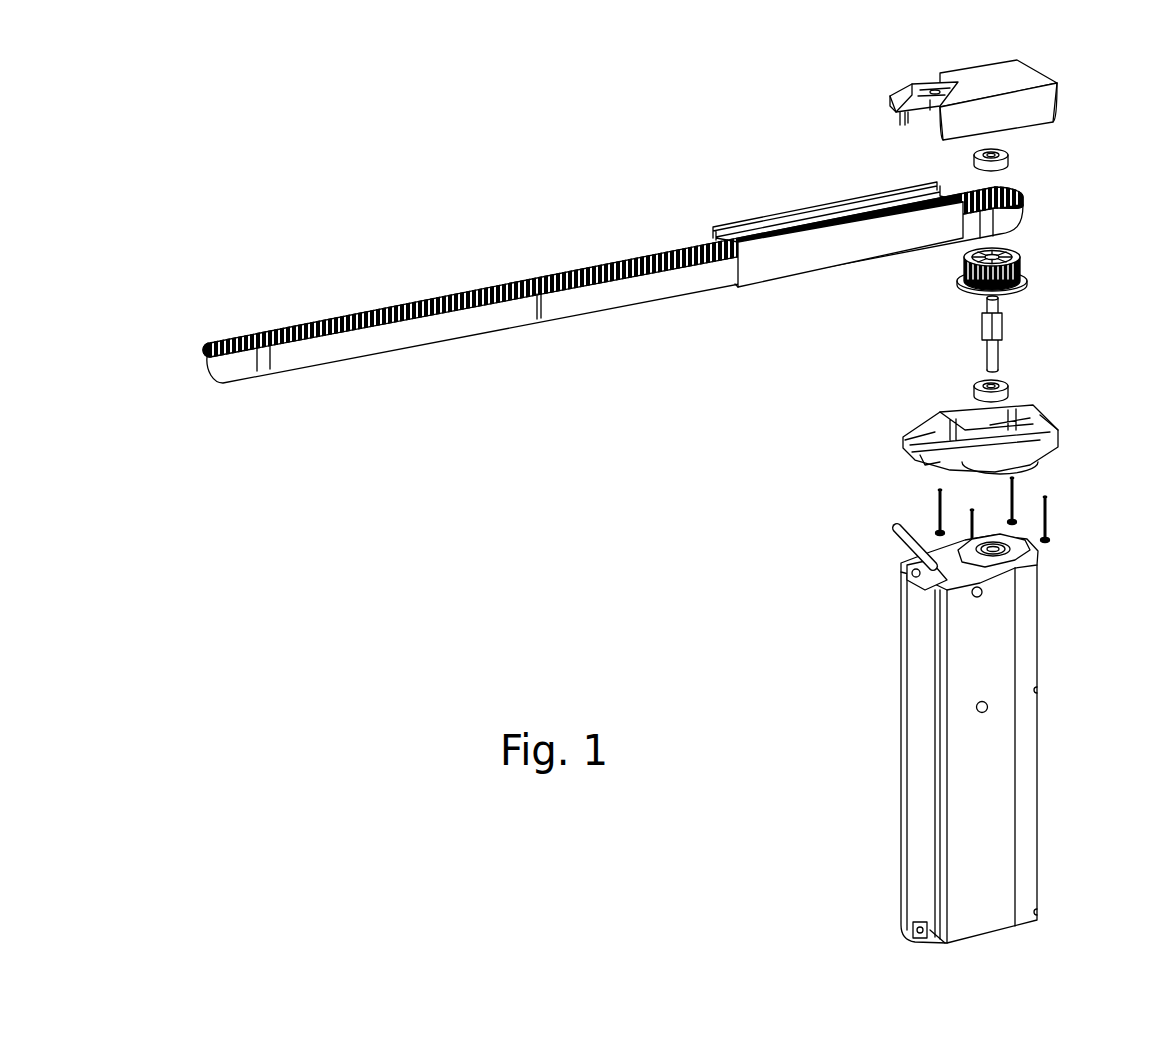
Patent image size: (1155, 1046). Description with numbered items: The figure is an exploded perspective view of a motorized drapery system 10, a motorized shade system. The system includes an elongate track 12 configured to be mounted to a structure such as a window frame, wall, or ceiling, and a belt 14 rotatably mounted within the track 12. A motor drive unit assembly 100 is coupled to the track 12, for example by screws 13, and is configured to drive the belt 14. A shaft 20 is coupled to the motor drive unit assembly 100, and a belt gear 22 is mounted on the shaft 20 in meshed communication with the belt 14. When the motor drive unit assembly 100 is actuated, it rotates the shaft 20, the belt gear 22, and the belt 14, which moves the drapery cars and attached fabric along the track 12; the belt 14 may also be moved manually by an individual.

The motorized drapery system 10 is at (666, 122).
The elongate track 12 is at (805, 207).
The belt 14 is at (453, 323).
The shaft 20 is at (1020, 320).
The belt gear 22 is at (1027, 263).
The screws 13 is at (1047, 517).
The motor drive unit assembly 100 is at (850, 604).